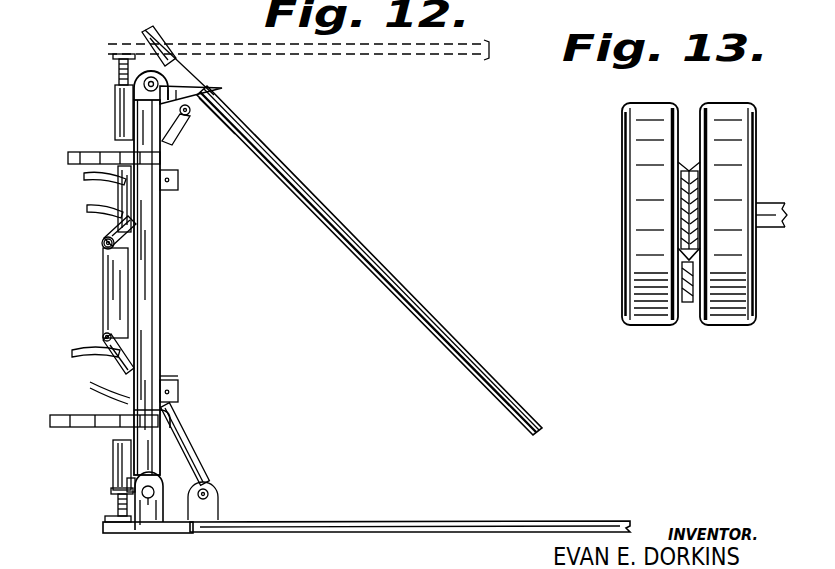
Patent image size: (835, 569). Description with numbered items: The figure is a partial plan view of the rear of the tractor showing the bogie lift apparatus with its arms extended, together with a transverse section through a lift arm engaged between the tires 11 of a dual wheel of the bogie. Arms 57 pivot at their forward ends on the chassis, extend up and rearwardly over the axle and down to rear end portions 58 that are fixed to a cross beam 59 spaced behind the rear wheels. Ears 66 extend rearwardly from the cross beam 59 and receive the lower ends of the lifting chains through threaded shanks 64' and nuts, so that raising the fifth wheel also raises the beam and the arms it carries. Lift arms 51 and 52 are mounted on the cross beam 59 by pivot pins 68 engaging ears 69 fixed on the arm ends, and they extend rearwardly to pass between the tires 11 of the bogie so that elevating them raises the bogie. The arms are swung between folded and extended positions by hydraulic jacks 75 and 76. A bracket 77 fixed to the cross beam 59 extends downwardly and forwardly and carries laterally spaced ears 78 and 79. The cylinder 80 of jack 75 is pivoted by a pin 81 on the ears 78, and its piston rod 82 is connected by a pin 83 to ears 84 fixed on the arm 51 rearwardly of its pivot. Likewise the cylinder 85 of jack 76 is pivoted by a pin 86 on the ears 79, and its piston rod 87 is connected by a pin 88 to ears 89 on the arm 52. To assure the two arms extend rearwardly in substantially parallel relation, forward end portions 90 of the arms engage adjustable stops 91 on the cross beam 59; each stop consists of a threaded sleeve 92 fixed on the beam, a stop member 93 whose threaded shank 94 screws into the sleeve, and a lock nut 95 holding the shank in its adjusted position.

In FIG. 13, the tires 11 is at (622, 226).
In FIG. 12, the lift arm 51 is at (437, 524).
In FIG. 13, the lift arm 51 is at (686, 310).
In FIG. 12, the lift arm 52 is at (333, 215).
In FIG. 12, the arms 57 is at (60, 420).
In FIG. 12, the rear end portions 58 is at (172, 418).
In FIG. 12, the cross beam 59 is at (155, 262).
In FIG. 12, the threaded shanks 64' is at (191, 391).
In FIG. 12, the ears 66 is at (170, 382).
In FIG. 12, the pivot pins 68 is at (166, 80).
In FIG. 12, the ears 69 is at (172, 48).
In FIG. 12, the hydraulic jack 75 is at (124, 366).
In FIG. 12, the hydraulic jack 76 is at (120, 194).
In FIG. 12, the bracket 77 is at (104, 292).
In FIG. 12, the ears 78 is at (103, 334).
In FIG. 12, the ears 79 is at (104, 250).
In FIG. 12, the cylinder 80 is at (110, 372).
In FIG. 12, the pin 81 is at (98, 343).
In FIG. 12, the piston rod 82 is at (176, 446).
In FIG. 12, the pin 83 is at (206, 492).
In FIG. 12, the ears 84 is at (220, 512).
In FIG. 12, the cylinder 85 is at (134, 232).
In FIG. 12, the pin 86 is at (104, 242).
In FIG. 12, the piston rod 87 is at (176, 138).
In FIG. 12, the pin 88 is at (190, 118).
In FIG. 12, the ears 89 is at (214, 96).
In FIG. 12, the end portions 90 is at (98, 534).
In FIG. 12, the adjustable stops 91 is at (113, 476).
In FIG. 12, the threaded sleeves 92 is at (113, 450).
In FIG. 12, the stop member 93 is at (76, 530).
In FIG. 12, the threaded shank 94 is at (114, 506).
In FIG. 12, the lock nut 95 is at (110, 490).